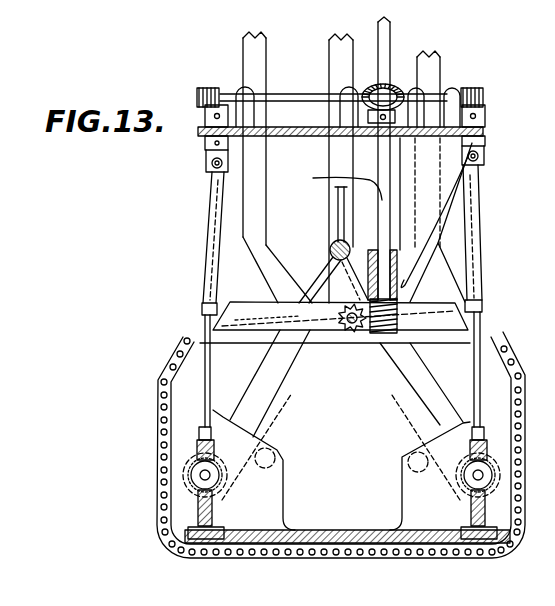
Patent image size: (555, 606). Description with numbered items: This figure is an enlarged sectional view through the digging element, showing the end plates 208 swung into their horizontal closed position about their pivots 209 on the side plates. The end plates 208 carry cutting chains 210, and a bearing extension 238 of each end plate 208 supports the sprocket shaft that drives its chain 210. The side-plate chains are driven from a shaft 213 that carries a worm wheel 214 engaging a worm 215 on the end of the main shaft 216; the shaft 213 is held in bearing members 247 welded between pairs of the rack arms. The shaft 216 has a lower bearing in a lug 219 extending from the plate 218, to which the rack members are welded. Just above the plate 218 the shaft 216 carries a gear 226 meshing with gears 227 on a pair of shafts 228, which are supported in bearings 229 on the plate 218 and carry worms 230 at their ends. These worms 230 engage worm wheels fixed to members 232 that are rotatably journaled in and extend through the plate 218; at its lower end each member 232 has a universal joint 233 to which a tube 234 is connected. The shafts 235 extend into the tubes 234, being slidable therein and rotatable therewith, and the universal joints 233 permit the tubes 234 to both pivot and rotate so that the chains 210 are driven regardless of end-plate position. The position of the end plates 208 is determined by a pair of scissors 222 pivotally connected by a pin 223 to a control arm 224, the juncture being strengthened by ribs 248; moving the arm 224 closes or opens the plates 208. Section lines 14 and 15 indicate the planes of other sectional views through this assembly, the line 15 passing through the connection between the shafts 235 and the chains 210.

The section line 14- 14 is at (195, 223).
The section line 15- 15 is at (203, 405).
The end plates 208 is at (295, 530).
The pivots 209 is at (284, 456).
The cutting chains 210 is at (358, 532).
The shaft 213 is at (350, 324).
The worm wheel 214 is at (350, 335).
The worm 215 is at (380, 345).
The shaft 216 is at (334, 158).
The plate 218 is at (280, 138).
The lug 219 is at (398, 280).
The scissors 222 is at (277, 396).
The pivot pin 223 is at (333, 253).
The control arm 224 is at (335, 40).
The gear 226 is at (370, 118).
The gears 227 is at (390, 82).
The shafts 228 is at (317, 70).
The bearings 229 is at (240, 88).
The worms 230 is at (205, 88).
The members 232 is at (205, 116).
The universal joint 233 is at (204, 167).
The tube 234 is at (206, 198).
The shafts 235 is at (213, 367).
The extension 238 is at (225, 505).
The bearing members 247 is at (300, 276).
The ribs 248 is at (338, 205).